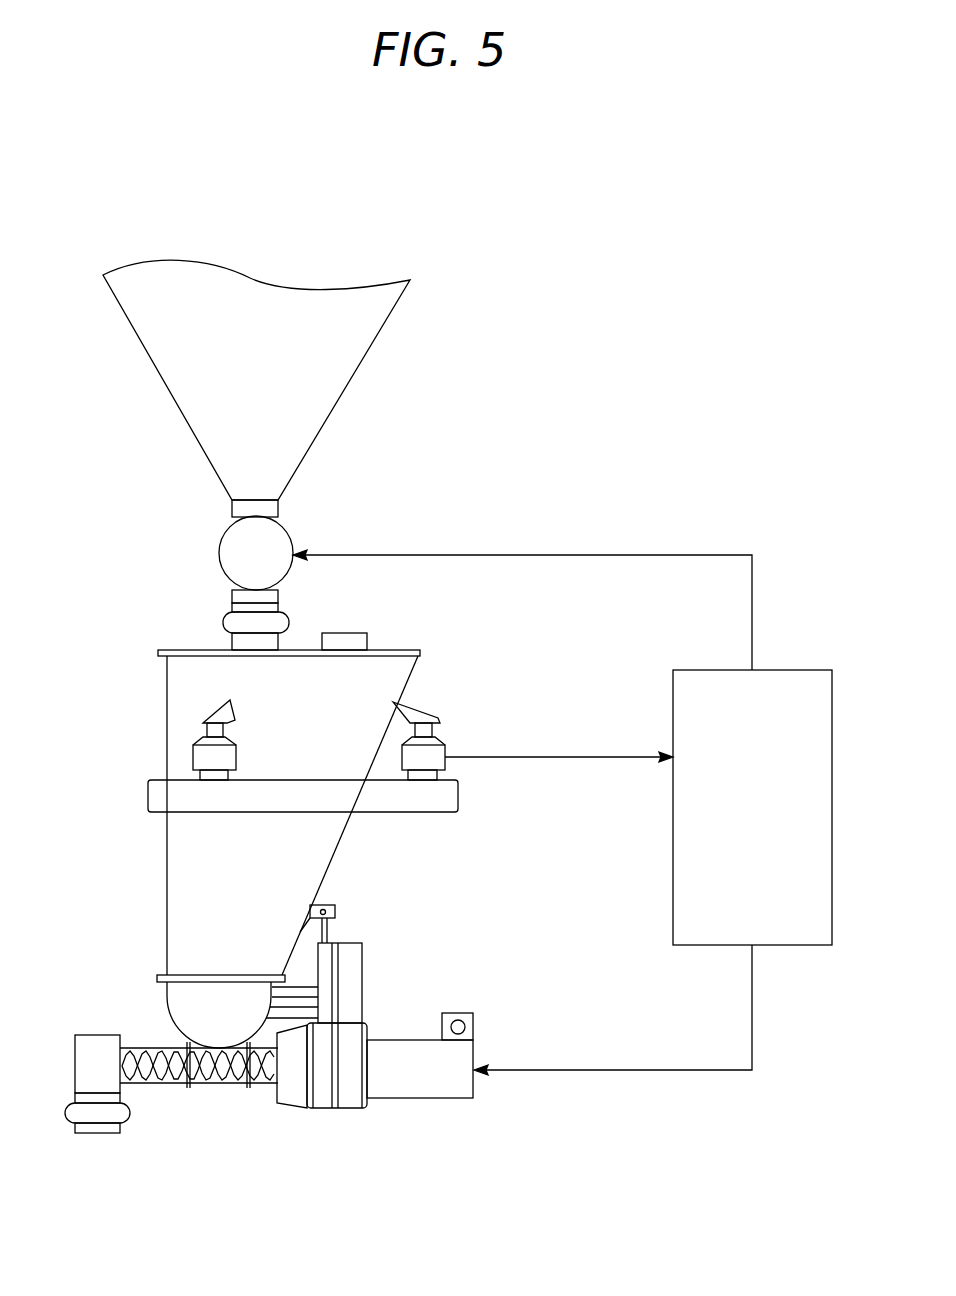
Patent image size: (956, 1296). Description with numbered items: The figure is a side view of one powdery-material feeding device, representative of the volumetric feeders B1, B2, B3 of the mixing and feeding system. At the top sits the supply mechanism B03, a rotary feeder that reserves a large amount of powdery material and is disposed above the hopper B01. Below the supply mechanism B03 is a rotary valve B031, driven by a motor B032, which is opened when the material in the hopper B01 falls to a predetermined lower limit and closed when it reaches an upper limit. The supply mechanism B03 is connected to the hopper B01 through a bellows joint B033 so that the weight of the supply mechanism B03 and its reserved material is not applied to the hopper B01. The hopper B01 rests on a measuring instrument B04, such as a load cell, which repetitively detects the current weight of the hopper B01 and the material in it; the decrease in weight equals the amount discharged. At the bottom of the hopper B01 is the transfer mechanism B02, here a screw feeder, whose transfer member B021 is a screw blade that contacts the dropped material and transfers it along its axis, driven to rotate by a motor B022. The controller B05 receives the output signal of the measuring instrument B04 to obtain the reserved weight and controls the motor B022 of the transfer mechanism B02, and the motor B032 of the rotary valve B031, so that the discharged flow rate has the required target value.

The volumetric feeder B1 is at (431, 649).
The volumetric feeder B2 is at (431, 649).
The volumetric feeder B3 is at (459, 184).
The hopper B01 is at (167, 825).
The transfer mechanism B02 is at (269, 1050).
The transfer member B021 is at (180, 1085).
The motor B022 is at (418, 1099).
The supply mechanism B03 is at (325, 432).
The rotary valve B031 is at (161, 564).
The motor B032 is at (219, 553).
The bellows joint B033 is at (223, 622).
The measuring instrument B04 is at (192, 758).
The controller B05 is at (673, 803).